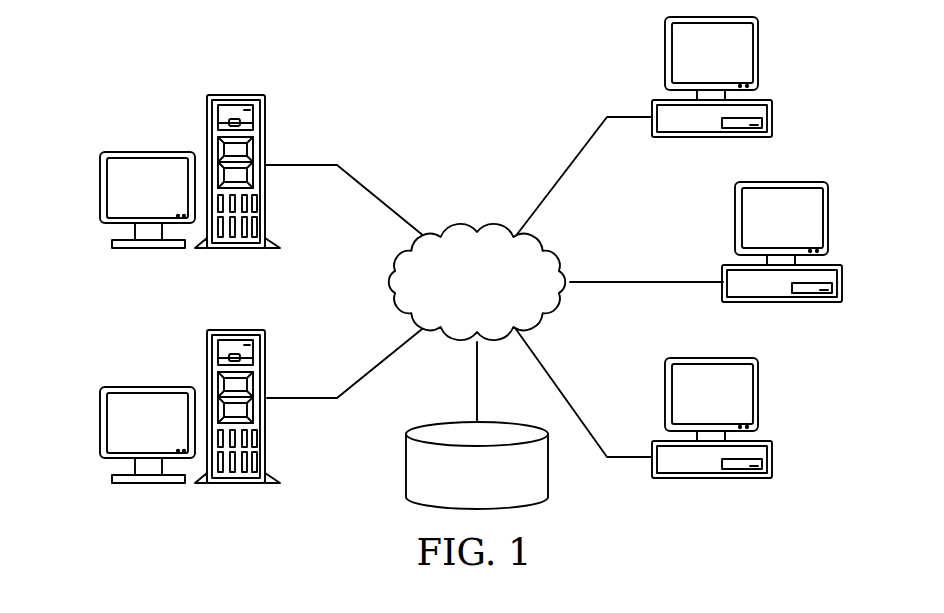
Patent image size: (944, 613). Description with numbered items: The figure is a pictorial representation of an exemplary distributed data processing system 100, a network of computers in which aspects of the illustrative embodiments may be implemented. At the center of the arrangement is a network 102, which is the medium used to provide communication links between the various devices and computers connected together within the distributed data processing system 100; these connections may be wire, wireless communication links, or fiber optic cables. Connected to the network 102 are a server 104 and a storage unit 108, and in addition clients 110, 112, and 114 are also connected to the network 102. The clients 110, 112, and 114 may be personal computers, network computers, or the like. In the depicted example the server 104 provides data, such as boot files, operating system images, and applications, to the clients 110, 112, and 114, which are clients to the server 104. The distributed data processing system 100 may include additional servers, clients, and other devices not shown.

The distributed data processing system 100 is at (343, 76).
The network 102 is at (450, 230).
The server 104 is at (100, 190).
The storage unit 108 is at (405, 462).
The client 110 is at (772, 108).
The client 112 is at (842, 292).
The client 114 is at (772, 467).